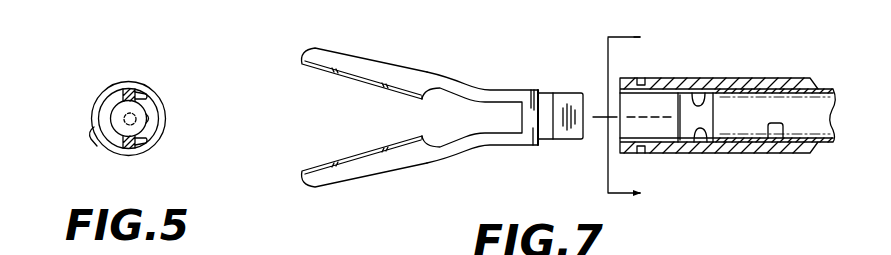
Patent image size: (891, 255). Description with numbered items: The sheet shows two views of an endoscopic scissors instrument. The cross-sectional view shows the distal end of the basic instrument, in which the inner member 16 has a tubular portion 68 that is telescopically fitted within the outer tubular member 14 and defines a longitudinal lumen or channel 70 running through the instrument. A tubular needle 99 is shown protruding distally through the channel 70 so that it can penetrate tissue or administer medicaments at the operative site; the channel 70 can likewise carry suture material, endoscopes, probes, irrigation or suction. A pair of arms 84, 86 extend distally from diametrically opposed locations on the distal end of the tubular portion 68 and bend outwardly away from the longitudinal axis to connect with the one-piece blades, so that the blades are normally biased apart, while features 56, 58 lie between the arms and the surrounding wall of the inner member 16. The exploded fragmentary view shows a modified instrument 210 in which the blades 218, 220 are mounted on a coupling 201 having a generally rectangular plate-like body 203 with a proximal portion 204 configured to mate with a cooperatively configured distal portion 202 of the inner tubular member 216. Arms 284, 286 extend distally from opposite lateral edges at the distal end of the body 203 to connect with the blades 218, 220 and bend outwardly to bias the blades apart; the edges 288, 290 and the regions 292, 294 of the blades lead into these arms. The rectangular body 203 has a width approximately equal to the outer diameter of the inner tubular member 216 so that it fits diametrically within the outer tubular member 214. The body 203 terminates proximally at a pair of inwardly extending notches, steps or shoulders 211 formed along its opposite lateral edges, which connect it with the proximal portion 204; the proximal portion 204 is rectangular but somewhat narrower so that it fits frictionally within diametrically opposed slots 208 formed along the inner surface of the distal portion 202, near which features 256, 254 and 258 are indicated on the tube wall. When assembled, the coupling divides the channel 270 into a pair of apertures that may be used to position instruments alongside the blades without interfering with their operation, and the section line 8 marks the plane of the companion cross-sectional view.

In FIG. 5, the outer tubular member 14 is at (168, 98).
In FIG. 5, the inner member 16 is at (102, 90).
In FIG. 5, the lumen or channel 70 is at (143, 125).
In FIG. 5, the tubular needle 99 is at (110, 118).
In FIG. 5, the upper key rib 56 is at (128, 88).
In FIG. 5, the lower key rib 58 is at (127, 157).
In FIG. 5, the arm 84 is at (143, 97).
In FIG. 5, the arm 86 is at (143, 157).
In FIG. 5, the tubular portion 68 is at (92, 132).
In FIG. 7, the blade 218 is at (275, 30).
In FIG. 7, the blade 220 is at (307, 188).
In FIG. 7, the upper bevel edge 288 is at (340, 77).
In FIG. 7, the lower bevel edge 290 is at (347, 157).
In FIG. 7, the upper neck 292 is at (430, 70).
In FIG. 7, the lower neck 294 is at (420, 167).
In FIG. 7, the arm 284 is at (478, 88).
In FIG. 7, the arm 286 is at (467, 148).
In FIG. 7, the coupling 201 is at (533, 84).
In FIG. 7, the rectangular plate-like body 203 is at (543, 143).
In FIG. 7, the proximal portion 204 is at (567, 140).
In FIG. 7, the shoulders 211 is at (560, 91).
In FIG. 7, the section line 8- 8 is at (616, 116).
In FIG. 7, the modified instrument 210 is at (813, 60).
In FIG. 7, the outer tubular member 214 is at (763, 76).
In FIG. 7, the inner tubular member 216 is at (743, 153).
In FIG. 7, the distal portion 202 is at (697, 95).
In FIG. 7, the slots 208 is at (697, 90).
In FIG. 7, the upper notch 256 is at (640, 82).
In FIG. 7, the lower notch 254 is at (622, 144).
In FIG. 7, the lower wall recess 258 is at (645, 152).
In FIG. 7, the channel 270 is at (778, 137).